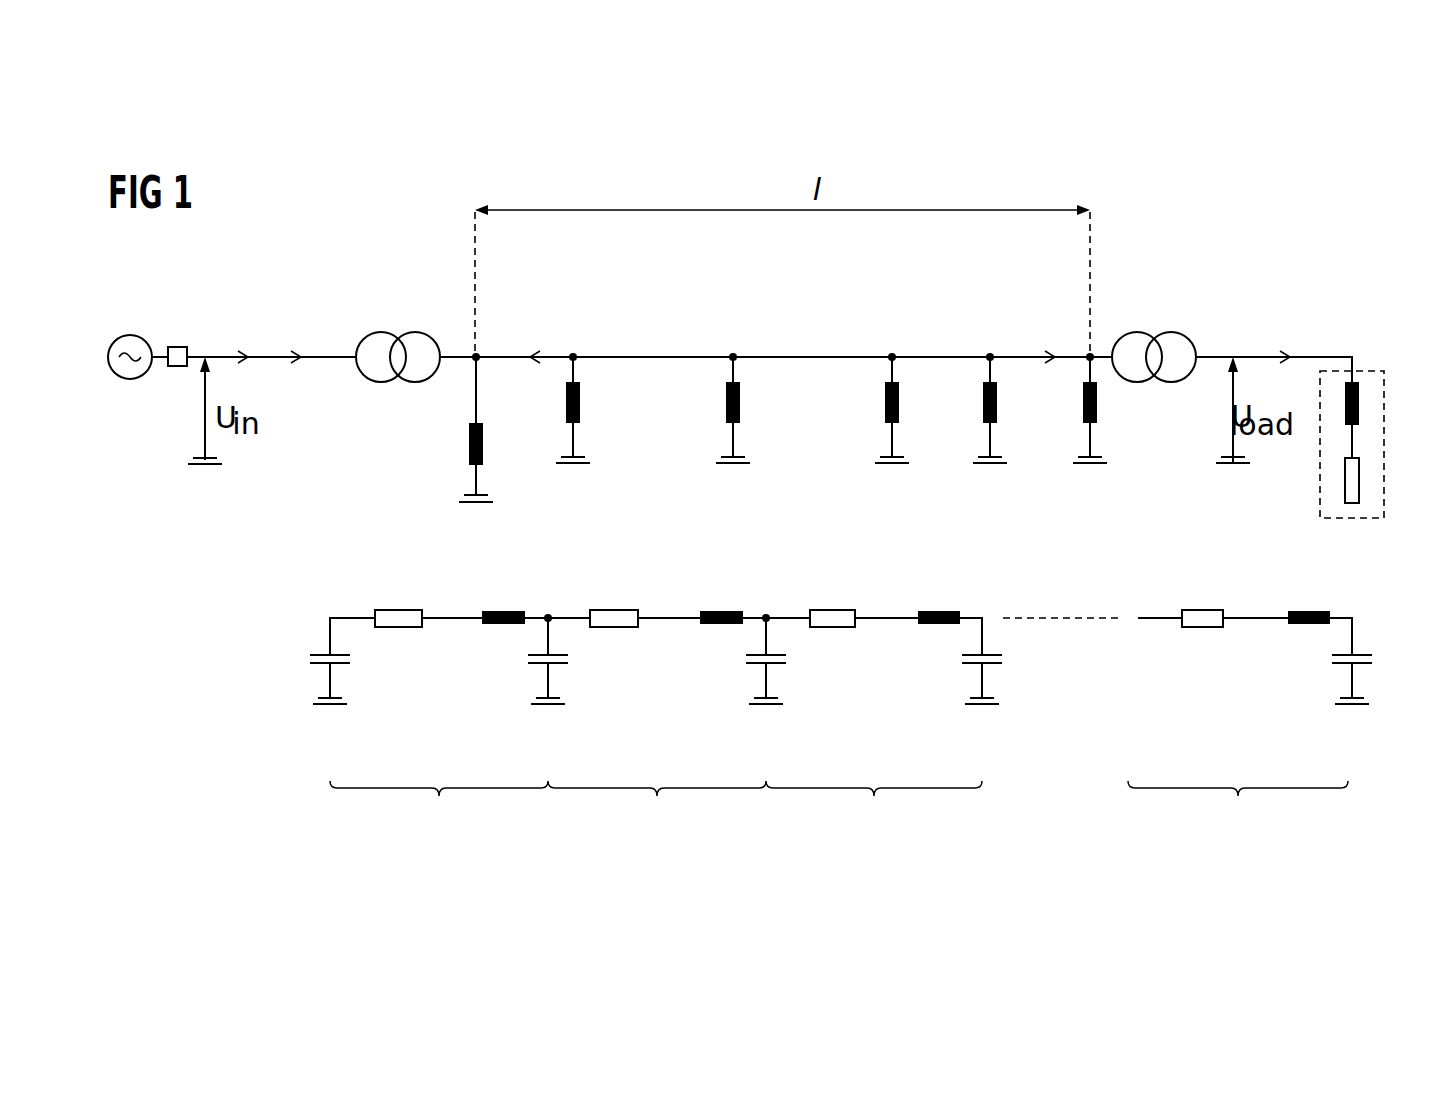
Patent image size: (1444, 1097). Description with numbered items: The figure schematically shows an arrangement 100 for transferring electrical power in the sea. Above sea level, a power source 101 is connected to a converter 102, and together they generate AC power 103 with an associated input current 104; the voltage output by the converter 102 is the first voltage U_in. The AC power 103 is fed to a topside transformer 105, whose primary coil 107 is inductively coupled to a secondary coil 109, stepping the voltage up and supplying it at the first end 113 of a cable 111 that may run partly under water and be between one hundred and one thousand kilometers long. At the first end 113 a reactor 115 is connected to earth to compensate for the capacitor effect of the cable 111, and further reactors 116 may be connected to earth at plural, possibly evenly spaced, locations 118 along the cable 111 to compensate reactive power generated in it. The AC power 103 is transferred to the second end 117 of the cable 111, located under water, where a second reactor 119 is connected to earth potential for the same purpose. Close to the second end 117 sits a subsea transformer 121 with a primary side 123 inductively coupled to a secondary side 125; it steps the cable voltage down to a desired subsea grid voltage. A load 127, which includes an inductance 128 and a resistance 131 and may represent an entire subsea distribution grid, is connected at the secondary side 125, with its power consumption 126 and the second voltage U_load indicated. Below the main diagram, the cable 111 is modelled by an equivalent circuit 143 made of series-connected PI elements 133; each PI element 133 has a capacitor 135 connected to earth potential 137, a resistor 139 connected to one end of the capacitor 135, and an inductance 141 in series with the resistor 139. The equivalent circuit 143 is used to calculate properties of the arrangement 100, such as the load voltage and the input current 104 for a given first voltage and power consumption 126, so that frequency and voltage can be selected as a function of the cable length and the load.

The arrangement 100 is at (1350, 230).
The power source 101 is at (131, 334).
The converter 102 is at (179, 346).
The AC power 103 is at (246, 350).
The input current 104 is at (298, 350).
The topside transformer 105 is at (399, 336).
The primary coil 107 is at (381, 384).
The secondary coil 109 is at (416, 384).
The cable 111 is at (815, 300).
The first end 113 is at (479, 354).
The reactor 115 is at (484, 456).
The further reactors 116 is at (565, 404).
The second end 117 is at (1088, 354).
The locations 118 is at (574, 353).
The second reactor 119 is at (1082, 404).
The subsea transformer 121 is at (1152, 337).
The primary side 123 is at (1136, 384).
The secondary side 125 is at (1172, 384).
The power consumption 126 is at (1288, 352).
The load 127 is at (1377, 412).
The load inductance 128 is at (1362, 402).
The resistance 131 is at (1362, 480).
The PI element 133 is at (839, 809).
The capacitor 135 is at (310, 660).
The earth potential 137 is at (474, 506).
The resistor 139 is at (400, 629).
The inductance 141 is at (503, 610).
The equivalent circuit 143 is at (788, 552).